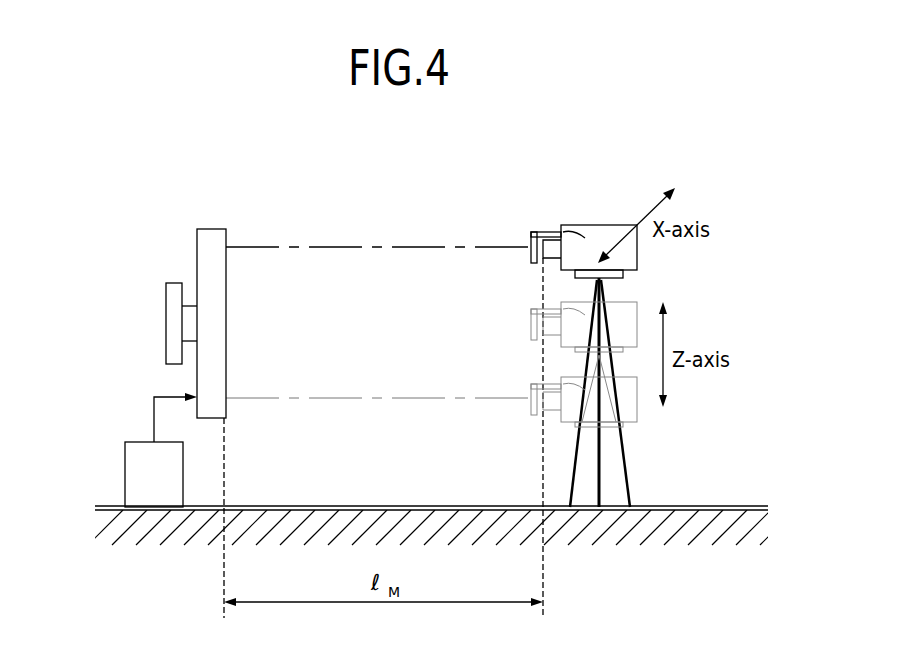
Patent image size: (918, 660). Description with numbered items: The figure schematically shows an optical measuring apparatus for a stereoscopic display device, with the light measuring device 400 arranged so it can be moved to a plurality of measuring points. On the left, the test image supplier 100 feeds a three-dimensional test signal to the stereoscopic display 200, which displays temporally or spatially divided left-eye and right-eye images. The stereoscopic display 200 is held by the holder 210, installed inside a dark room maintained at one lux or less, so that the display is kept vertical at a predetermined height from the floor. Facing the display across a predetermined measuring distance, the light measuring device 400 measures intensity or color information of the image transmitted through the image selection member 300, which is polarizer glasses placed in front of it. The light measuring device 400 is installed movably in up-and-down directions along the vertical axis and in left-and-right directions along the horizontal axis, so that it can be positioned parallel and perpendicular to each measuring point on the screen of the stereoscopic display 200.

The test image supplier 100 is at (125, 442).
The 3D display 200 is at (197, 228).
The holder 210 is at (166, 283).
The image selection member 300 is at (531, 232).
The light measuring device 400 is at (575, 225).